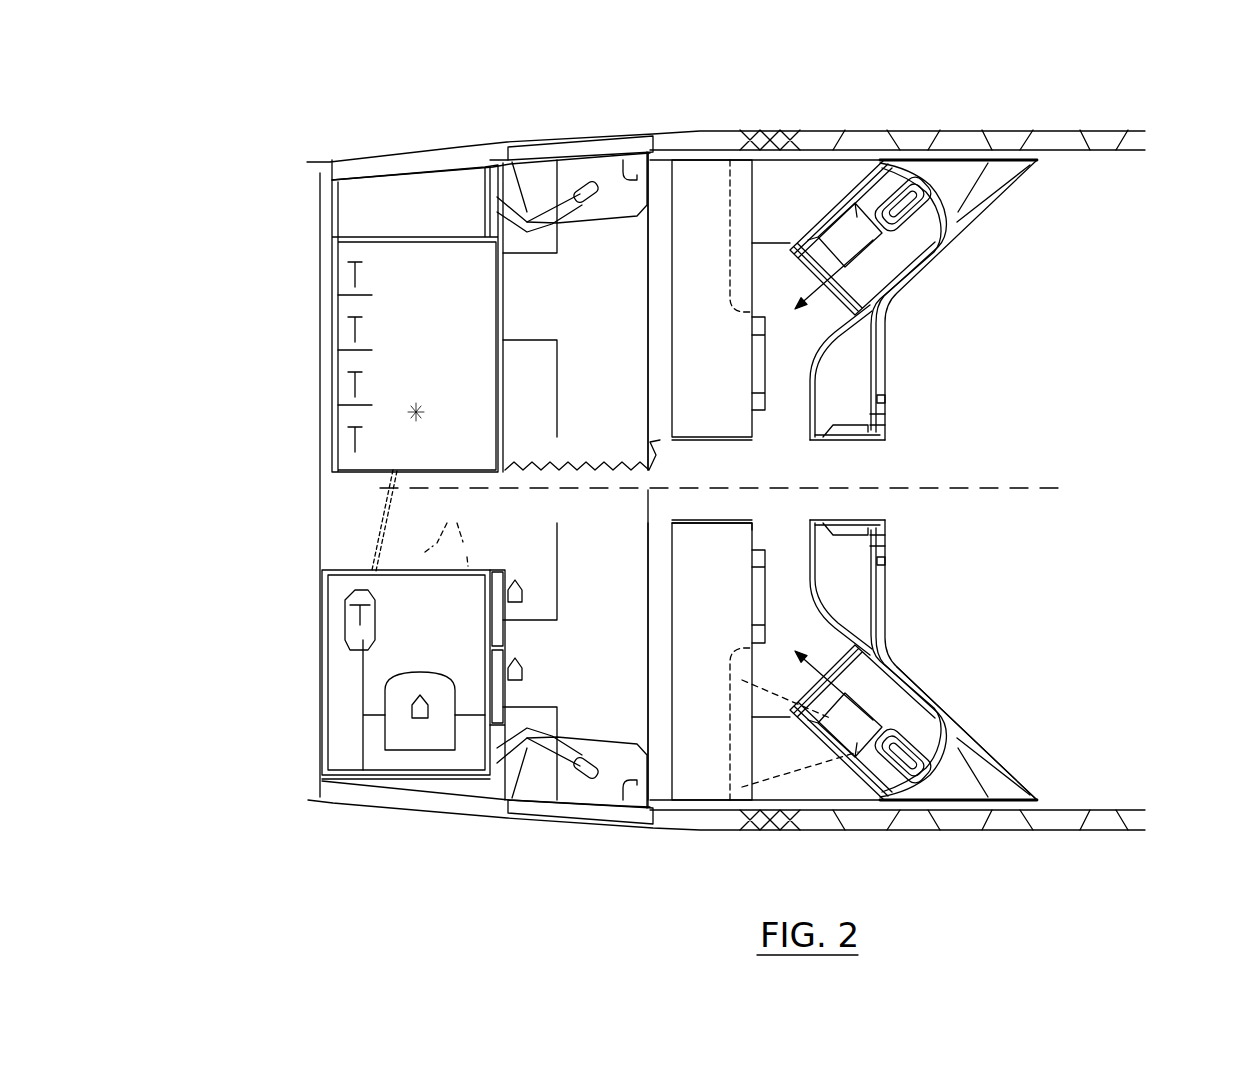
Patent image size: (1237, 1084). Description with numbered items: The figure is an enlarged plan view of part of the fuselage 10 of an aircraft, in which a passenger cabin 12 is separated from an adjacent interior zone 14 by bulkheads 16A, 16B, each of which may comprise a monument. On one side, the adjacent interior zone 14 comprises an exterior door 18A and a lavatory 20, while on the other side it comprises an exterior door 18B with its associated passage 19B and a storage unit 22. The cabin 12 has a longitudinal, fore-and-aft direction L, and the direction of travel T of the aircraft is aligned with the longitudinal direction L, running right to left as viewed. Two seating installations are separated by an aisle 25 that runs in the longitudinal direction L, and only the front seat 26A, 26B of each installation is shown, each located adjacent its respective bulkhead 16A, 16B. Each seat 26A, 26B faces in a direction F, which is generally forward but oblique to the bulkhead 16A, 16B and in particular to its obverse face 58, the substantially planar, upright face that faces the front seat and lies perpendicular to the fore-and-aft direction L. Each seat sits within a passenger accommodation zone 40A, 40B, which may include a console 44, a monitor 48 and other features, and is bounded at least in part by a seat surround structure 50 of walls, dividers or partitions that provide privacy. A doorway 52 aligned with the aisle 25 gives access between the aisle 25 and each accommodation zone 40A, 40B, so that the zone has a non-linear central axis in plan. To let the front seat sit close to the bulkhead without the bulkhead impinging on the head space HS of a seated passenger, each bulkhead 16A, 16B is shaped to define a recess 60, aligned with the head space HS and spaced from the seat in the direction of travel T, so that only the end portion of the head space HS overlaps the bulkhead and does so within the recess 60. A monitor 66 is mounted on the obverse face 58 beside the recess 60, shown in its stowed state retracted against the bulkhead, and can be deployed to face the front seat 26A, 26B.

The fuselage 10 is at (1098, 130).
The passenger cabin 12 is at (1102, 294).
The adjacent interior zone 14 is at (420, 521).
The bulkhead 16A is at (698, 790).
The bulkhead 16B is at (701, 178).
The exterior door 18A is at (524, 808).
The exterior door 18B is at (566, 147).
The passage 19B is at (605, 312).
The lavatory 20 is at (380, 662).
The storage unit 22 is at (380, 268).
The aisle 25 is at (857, 476).
The seat 26A is at (850, 795).
The seat 26B is at (862, 175).
The passenger accommodation zone 40A is at (880, 598).
The passenger accommodation zone 40B is at (878, 367).
The console 44 is at (858, 396).
The monitor 48 is at (893, 668).
The seat surround structure 50 is at (873, 355).
The doorway 52 is at (800, 451).
The obverse face 58 is at (756, 518).
The recess 60 is at (745, 200).
The monitor 66 is at (757, 355).
The direction of travel T is at (362, 488).
The longitudinal direction L is at (1070, 488).
The direction F is at (850, 468).
The head space HS is at (797, 790).